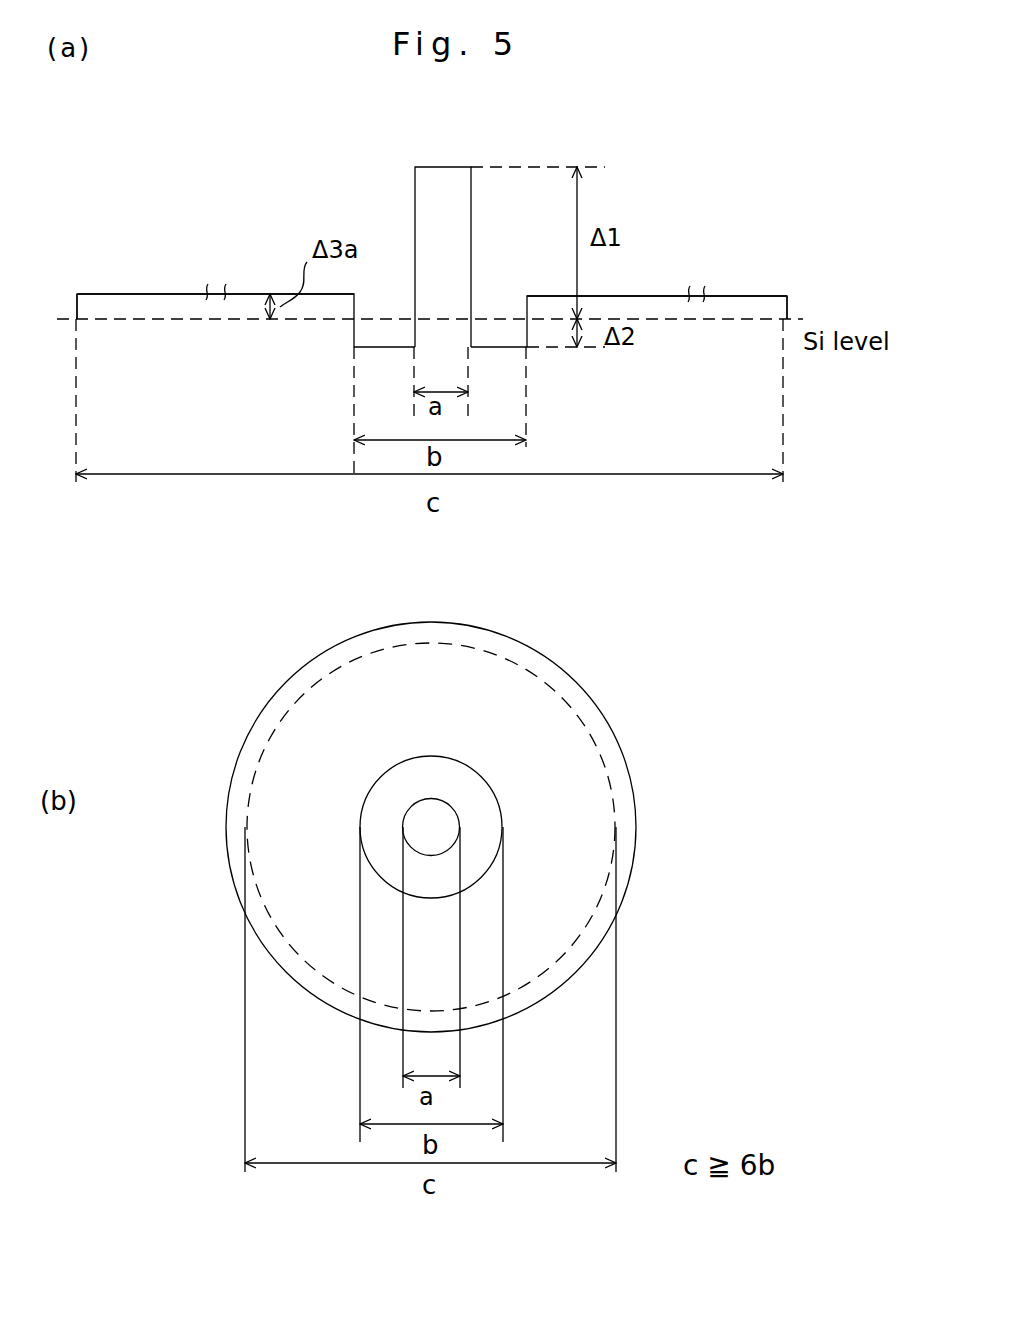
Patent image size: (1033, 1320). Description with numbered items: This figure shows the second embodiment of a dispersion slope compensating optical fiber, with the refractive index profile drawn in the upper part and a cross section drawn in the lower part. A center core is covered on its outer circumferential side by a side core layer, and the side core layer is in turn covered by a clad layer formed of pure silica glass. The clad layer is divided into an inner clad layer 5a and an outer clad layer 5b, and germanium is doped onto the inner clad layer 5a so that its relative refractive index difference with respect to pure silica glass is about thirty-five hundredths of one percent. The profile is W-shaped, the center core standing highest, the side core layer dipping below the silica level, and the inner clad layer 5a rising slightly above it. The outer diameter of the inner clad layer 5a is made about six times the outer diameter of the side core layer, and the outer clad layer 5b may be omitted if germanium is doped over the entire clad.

The inner clad layer 5a is at (432, 295).
The outer clad layer 5b is at (432, 306).